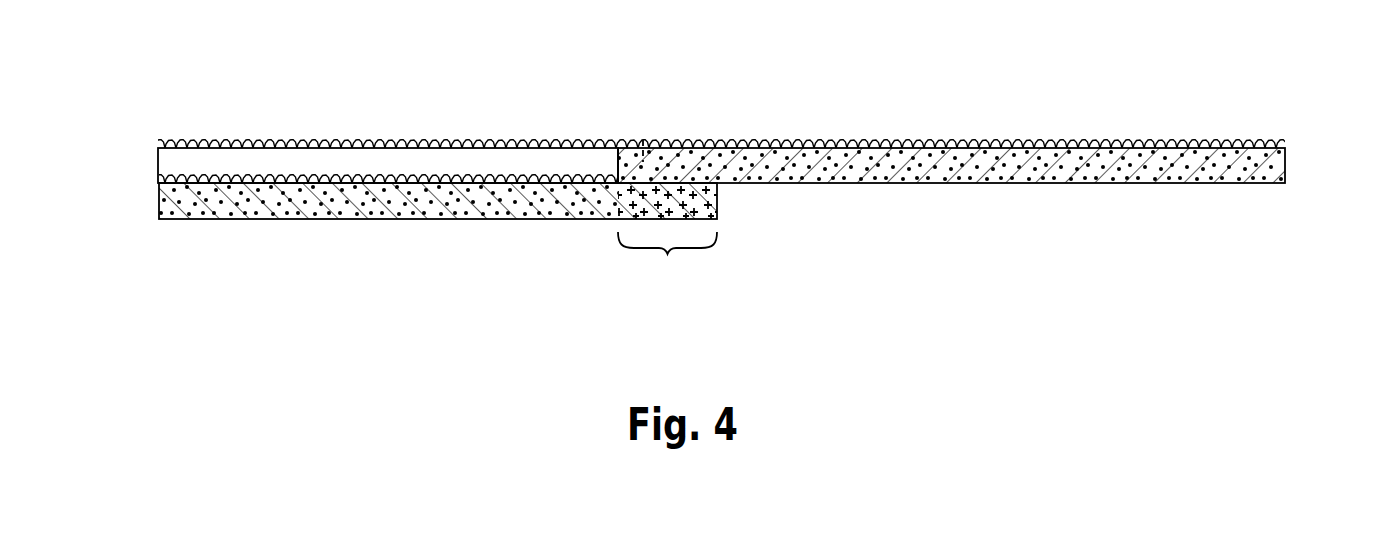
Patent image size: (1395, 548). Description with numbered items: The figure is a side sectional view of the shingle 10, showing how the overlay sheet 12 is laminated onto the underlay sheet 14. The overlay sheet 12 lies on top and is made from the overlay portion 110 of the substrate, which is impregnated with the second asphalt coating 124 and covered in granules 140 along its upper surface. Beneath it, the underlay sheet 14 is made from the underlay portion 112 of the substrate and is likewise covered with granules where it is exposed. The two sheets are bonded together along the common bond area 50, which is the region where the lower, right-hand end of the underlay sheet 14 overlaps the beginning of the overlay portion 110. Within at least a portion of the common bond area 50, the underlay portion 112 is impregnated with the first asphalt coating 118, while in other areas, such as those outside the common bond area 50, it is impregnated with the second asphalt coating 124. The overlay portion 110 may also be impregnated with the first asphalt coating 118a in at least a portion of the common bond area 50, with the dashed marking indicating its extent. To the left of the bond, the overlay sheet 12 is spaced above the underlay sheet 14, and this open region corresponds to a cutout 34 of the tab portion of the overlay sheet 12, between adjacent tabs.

The shingle 10 is at (199, 102).
The overlay sheet 12 is at (1311, 127).
The underlay sheet 14 is at (124, 232).
The cutout 34 is at (364, 158).
The common bond area 50 is at (667, 258).
The overlay portion 110 is at (1283, 163).
The underlay portion 112 is at (170, 189).
The first asphalt coating 118 is at (718, 212).
The first asphalt coating 118a is at (643, 140).
The second asphalt coating 124 is at (737, 148).
The granules 140 is at (973, 146).